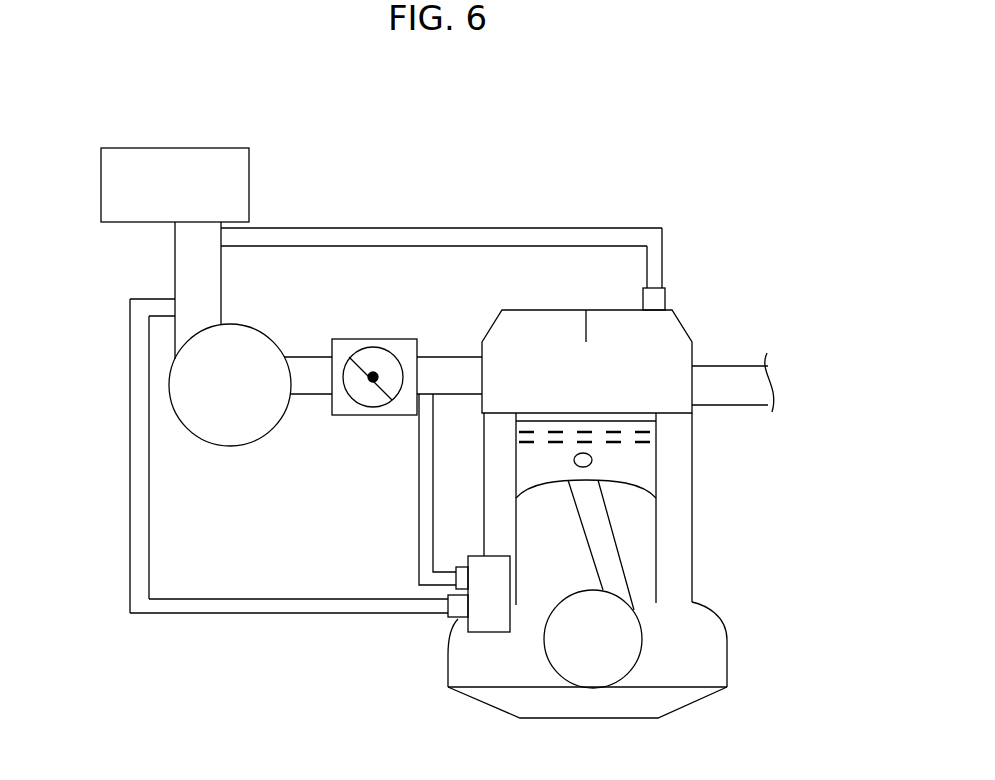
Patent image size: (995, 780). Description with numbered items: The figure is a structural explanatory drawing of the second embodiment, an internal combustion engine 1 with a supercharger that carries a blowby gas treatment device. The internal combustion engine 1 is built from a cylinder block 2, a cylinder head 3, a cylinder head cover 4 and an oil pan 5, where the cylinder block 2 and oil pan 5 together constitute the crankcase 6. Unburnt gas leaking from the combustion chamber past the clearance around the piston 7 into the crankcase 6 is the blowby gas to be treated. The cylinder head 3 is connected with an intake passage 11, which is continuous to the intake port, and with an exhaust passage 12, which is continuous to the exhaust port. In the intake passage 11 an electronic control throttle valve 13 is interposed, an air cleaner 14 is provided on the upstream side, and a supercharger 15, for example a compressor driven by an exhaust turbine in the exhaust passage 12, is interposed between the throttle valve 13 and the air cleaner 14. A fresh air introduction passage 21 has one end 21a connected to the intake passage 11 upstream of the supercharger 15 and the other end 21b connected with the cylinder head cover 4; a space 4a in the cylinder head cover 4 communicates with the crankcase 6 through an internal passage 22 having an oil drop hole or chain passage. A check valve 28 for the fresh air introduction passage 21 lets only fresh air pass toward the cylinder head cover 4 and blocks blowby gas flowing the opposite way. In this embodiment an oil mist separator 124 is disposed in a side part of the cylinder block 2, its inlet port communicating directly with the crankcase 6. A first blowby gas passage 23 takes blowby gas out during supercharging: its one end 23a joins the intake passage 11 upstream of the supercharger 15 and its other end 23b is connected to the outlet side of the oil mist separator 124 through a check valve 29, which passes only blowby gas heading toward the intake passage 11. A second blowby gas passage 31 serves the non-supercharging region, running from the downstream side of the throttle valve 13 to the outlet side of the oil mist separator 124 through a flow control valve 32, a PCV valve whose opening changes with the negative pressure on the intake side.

The internal combustion engine 1 is at (727, 452).
The cylinder block 2 is at (693, 530).
The cylinder head 3 is at (692, 388).
The cylinder head cover 4 is at (685, 325).
The space 4a is at (622, 332).
The oil pan 5 is at (690, 705).
The crankcase 6 is at (687, 663).
The piston 7 is at (652, 463).
The intake passage 11 is at (306, 386).
The exhaust passage 12 is at (760, 388).
The electronic control throttle valve 13 is at (383, 397).
The air cleaner 14 is at (200, 172).
The supercharger 15 is at (219, 415).
The fresh air introduction passage 21 is at (425, 235).
The one end of fresh air introduction passage 21a is at (227, 238).
The other end of fresh air introduction passage 21b is at (658, 283).
The internal passage 22 is at (680, 568).
The first blowby gas passage 23 is at (139, 395).
The one end of first blowby gas passage 23a is at (160, 305).
The other end of first blowby gas passage 23b is at (436, 605).
The check valve for fresh air introduction passage 28 is at (660, 302).
The check valve for blowby gas passage 29 is at (453, 617).
The second blowby gas passage 31 is at (427, 500).
The flow control valve 32 is at (461, 567).
The oil mist separator 124 is at (483, 622).